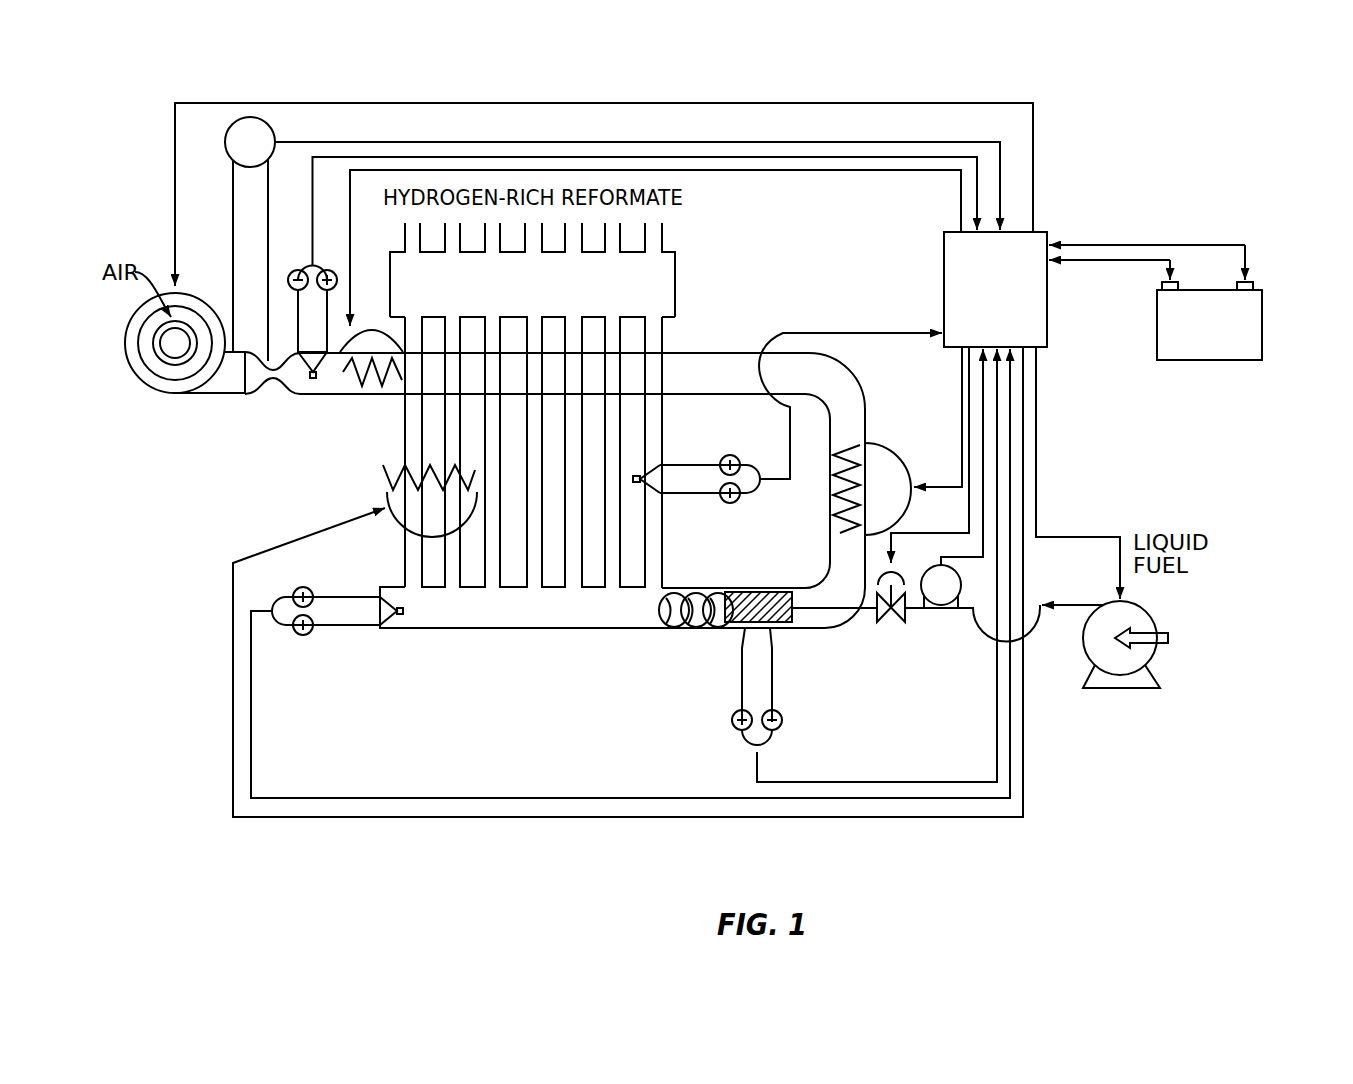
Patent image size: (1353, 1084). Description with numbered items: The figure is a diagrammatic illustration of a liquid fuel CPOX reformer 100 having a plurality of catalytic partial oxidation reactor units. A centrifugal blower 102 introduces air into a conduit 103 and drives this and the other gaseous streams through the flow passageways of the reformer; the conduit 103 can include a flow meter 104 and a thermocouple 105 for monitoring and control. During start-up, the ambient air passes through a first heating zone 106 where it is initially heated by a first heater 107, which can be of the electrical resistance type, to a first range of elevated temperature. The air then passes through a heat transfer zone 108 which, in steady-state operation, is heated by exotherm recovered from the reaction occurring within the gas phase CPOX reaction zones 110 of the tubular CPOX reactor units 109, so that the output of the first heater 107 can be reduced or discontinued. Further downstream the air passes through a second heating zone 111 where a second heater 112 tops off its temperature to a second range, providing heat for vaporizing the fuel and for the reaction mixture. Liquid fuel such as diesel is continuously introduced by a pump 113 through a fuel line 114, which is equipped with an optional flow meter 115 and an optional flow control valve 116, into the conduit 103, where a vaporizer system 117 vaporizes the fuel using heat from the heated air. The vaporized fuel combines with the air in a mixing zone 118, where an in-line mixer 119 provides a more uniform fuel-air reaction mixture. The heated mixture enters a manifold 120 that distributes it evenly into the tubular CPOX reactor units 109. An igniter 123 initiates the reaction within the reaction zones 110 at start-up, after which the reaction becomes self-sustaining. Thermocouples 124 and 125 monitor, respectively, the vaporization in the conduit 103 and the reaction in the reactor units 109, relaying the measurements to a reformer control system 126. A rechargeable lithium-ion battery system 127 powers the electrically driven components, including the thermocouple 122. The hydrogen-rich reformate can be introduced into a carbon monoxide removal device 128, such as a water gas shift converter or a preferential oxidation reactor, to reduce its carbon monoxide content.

The liquid fuel CPOX reformer 100 is at (1112, 138).
The centrifugal blower 102 is at (137, 375).
The conduit 103 is at (282, 393).
The flow meter 104 is at (250, 117).
The thermocouple 105 is at (313, 262).
The first heating zone 106 is at (360, 398).
The first heater 107 is at (402, 397).
The heat transfer zone 108 is at (550, 376).
The tubular CPOX reactor unit 109 is at (620, 457).
The gas phase CPOX reaction zone 110 is at (614, 379).
The second heating zone 111 is at (831, 508).
The second heater 112 is at (849, 530).
The pump 113 is at (1152, 617).
The fuel line 114 is at (1040, 602).
The flow meter 115 is at (940, 610).
The flow control valve 116 is at (880, 624).
The vaporizer system 117 is at (780, 627).
The mixing zone 118 is at (704, 630).
The in-line mixer 119 is at (680, 630).
The manifold 120 is at (550, 616).
The thermocouple 122 is at (347, 628).
The igniter 123 is at (385, 478).
The thermocouple 124 is at (774, 690).
The thermocouple 125 is at (673, 497).
The reformer control system 126 is at (1040, 232).
The rechargeable lithium-ion battery system 127 is at (1263, 308).
The carbon monoxide removal device 128 is at (677, 270).